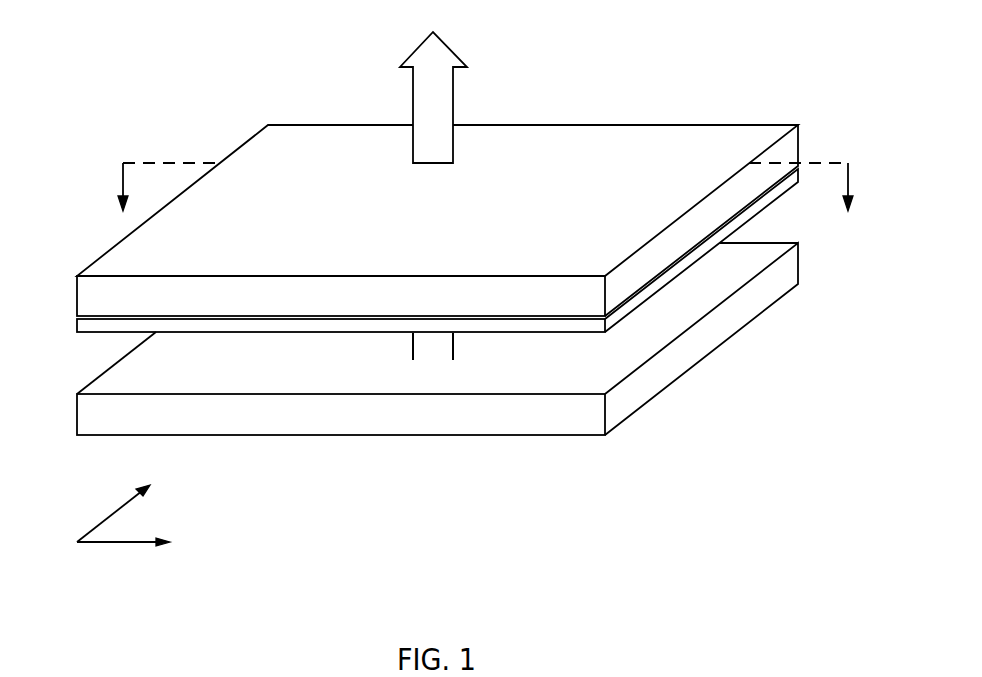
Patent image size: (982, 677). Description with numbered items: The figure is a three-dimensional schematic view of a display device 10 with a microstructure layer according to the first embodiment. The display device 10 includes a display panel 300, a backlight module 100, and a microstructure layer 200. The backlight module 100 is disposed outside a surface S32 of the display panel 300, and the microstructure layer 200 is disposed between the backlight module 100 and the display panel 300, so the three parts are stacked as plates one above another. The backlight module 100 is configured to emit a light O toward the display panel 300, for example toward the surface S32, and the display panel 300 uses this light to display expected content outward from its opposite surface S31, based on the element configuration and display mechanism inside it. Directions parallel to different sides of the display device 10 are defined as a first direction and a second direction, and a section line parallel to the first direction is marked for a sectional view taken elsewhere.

The display device 10 is at (114, 40).
The backlight module 100 is at (587, 418).
The microstructure layer 200 is at (595, 324).
The display panel 300 is at (740, 190).
The surface S31 is at (130, 254).
The surface S32 is at (129, 322).